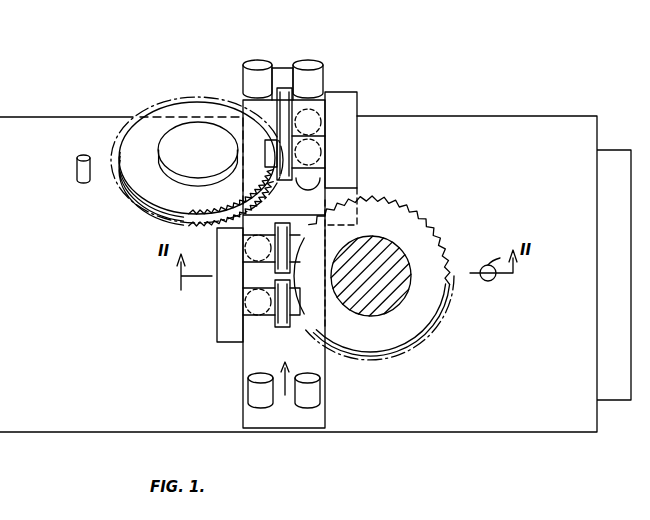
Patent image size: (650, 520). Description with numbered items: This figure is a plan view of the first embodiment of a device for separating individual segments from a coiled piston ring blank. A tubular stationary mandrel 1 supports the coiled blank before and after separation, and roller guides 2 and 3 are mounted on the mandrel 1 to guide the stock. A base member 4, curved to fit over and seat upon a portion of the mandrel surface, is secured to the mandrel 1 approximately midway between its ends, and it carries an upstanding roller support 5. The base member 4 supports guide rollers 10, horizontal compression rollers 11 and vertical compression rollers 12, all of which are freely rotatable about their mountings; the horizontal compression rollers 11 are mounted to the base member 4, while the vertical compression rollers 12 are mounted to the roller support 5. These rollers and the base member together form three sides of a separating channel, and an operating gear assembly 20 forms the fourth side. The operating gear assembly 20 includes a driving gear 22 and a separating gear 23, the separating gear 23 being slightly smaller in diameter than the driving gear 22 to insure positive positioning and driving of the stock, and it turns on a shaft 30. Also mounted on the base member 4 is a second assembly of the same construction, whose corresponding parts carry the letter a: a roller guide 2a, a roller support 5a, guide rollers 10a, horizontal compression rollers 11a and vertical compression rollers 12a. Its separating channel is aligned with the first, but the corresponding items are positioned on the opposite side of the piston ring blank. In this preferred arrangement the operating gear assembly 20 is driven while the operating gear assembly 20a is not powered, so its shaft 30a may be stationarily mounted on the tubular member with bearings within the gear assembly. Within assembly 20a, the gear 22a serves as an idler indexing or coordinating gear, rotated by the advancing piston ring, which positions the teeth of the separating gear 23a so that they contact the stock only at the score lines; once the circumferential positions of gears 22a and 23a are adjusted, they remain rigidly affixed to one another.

The tubular stationary mandrel 1 is at (80, 356).
The roller guide 2 is at (84, 155).
The roller guide 2a is at (284, 88).
The roller guide 3 is at (486, 265).
The base member 4 is at (334, 379).
The roller support 5 is at (228, 292).
The roller support 5a is at (357, 168).
The guide rollers 10 is at (306, 408).
The guide rollers 10a is at (303, 60).
The horizontal compression rollers 11 is at (250, 308).
The horizontal compression rollers 11a is at (330, 156).
The vertical compression rollers 12 is at (283, 328).
The vertical compression rollers 12a is at (288, 182).
The operating gear assembly 20 is at (448, 230).
The operating gear assembly 20a is at (188, 92).
The driving gear 22 is at (405, 352).
The separating gear 23 is at (380, 318).
The indexing gear 22a is at (150, 208).
The separating gear 23a is at (197, 160).
The shaft 30 is at (398, 300).
The shaft 30a is at (198, 154).